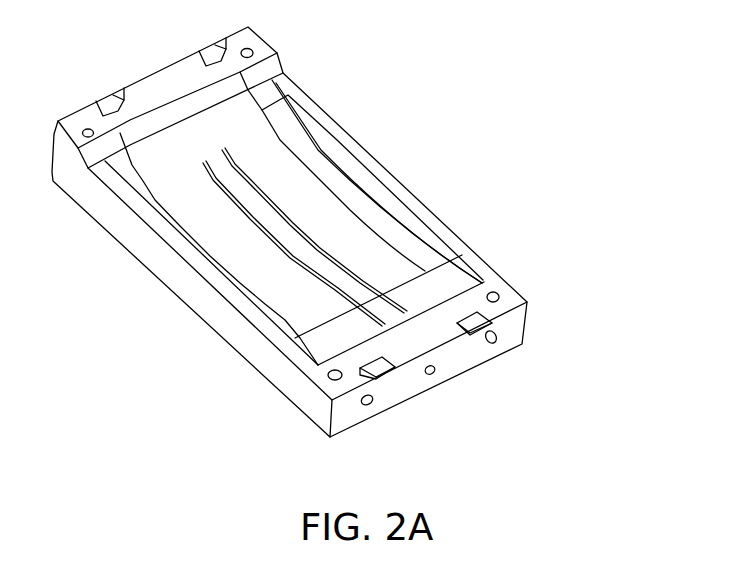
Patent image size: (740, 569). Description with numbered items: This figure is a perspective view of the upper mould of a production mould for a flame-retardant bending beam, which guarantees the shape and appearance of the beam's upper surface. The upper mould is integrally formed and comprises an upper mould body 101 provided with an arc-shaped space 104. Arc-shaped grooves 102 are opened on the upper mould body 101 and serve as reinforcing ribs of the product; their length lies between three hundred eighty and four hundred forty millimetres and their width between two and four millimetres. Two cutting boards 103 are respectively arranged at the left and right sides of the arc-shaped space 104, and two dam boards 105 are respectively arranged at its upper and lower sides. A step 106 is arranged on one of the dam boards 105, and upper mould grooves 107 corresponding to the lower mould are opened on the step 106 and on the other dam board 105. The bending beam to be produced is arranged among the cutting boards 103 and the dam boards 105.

The upper mould body 101 is at (310, 100).
The arc-shaped grooves 102 is at (290, 228).
The cutting boards 103 is at (440, 247).
The arc-shaped space 104 is at (277, 167).
The dam boards 105 is at (527, 302).
The step 106 is at (272, 68).
The upper mould grooves 107 is at (480, 332).